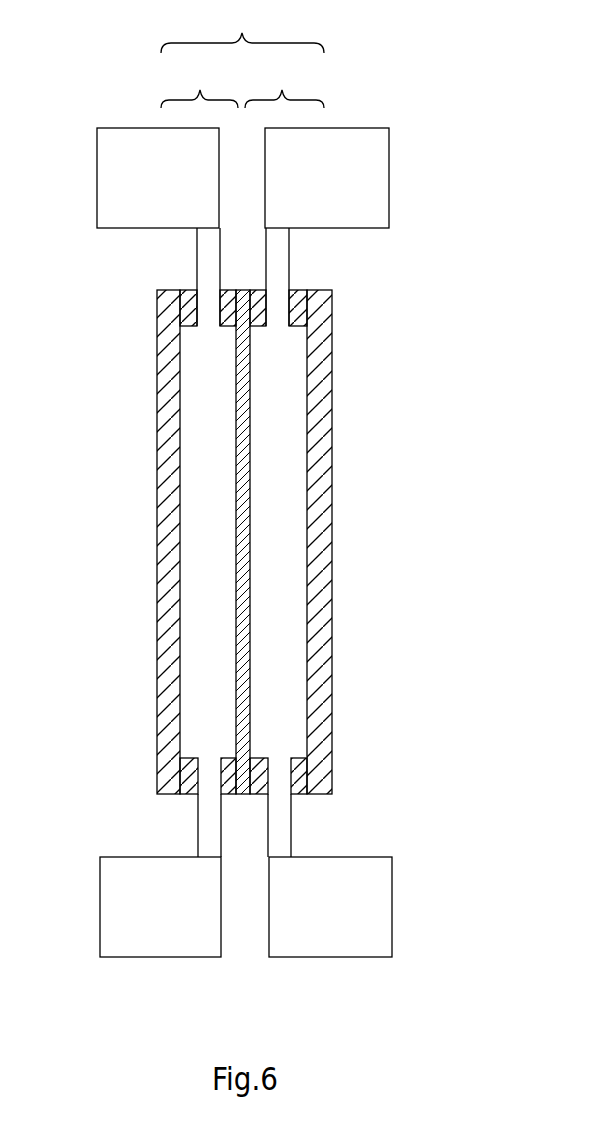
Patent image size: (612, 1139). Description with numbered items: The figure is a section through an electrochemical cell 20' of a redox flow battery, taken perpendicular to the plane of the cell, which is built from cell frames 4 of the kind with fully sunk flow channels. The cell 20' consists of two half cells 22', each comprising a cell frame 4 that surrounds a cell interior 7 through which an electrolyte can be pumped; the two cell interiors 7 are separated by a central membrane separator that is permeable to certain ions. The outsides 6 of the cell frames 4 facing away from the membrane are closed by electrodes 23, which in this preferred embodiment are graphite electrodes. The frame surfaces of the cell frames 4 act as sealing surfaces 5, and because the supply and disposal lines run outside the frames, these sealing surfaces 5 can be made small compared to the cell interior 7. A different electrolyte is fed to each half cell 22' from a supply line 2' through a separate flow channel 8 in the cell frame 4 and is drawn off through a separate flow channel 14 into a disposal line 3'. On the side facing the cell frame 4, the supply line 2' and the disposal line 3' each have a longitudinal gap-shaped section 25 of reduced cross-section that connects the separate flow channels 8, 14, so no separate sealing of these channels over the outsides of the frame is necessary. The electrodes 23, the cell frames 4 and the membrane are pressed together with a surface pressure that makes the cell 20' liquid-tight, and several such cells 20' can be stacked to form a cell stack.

The supply line 2' is at (243, 178).
The disposal line 3' is at (246, 907).
The electrochemical cell 20' is at (242, 30).
The half cell 22' is at (242, 85).
The gap-shaped section 25 is at (205, 267).
The outside of the cell frame 6 is at (178, 301).
The cell frame 4 is at (190, 777).
The sealing surface 5 is at (186, 316).
The flow channel 8 is at (207, 317).
The flow channel 14 is at (208, 765).
The cell interior 7 is at (200, 469).
The electrode 23 is at (170, 597).